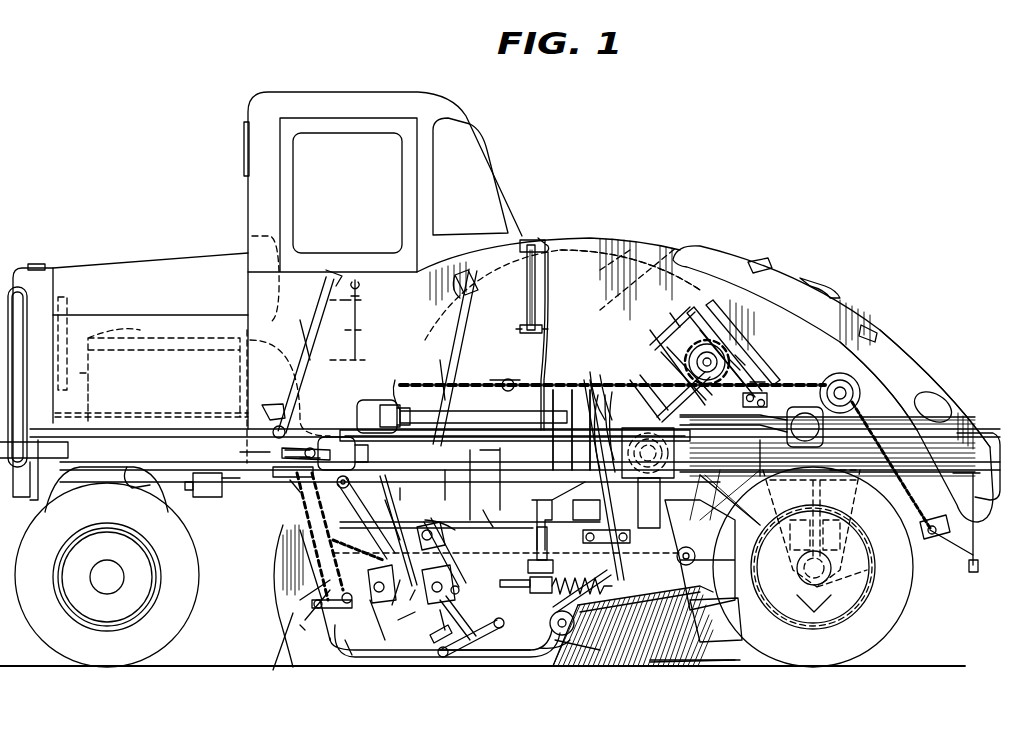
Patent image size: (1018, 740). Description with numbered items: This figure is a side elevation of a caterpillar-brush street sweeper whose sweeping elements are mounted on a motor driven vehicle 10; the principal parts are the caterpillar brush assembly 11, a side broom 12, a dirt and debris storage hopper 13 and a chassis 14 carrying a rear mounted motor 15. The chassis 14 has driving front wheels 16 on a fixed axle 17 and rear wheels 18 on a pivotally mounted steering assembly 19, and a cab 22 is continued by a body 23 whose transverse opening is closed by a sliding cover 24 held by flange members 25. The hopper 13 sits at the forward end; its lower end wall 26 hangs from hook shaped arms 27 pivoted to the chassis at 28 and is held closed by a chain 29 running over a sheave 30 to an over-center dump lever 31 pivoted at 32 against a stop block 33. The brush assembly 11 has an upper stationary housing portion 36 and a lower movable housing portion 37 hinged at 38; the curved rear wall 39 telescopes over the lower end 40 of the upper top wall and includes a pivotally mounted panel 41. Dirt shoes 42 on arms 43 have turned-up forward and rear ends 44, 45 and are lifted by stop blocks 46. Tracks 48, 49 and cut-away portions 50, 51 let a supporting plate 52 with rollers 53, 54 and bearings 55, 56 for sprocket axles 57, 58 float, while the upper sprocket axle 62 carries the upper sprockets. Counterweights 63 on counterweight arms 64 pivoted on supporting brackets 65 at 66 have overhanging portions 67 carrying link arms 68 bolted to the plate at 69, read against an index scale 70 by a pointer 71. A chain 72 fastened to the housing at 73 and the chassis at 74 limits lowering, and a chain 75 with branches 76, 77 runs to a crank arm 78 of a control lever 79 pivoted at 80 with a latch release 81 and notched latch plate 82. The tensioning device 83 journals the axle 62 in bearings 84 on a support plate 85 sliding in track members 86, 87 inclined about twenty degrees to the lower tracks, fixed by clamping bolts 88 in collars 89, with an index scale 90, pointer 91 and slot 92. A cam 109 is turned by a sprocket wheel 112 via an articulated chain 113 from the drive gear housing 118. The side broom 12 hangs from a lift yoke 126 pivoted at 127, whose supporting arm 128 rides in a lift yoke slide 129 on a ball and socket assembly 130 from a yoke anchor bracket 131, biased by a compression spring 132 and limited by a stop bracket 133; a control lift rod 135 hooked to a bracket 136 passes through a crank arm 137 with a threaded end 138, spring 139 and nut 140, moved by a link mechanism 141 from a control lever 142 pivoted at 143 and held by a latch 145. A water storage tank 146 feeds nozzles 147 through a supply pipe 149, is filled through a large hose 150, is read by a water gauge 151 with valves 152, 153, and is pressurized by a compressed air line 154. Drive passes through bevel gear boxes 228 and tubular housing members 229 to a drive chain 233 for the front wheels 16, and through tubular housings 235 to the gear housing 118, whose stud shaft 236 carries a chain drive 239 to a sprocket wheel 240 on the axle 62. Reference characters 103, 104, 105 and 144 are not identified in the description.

The motor driven vehicle 10 is at (245, 252).
The caterpillar brush assembly 11 is at (305, 622).
The side brooms 12 is at (652, 660).
The dirt and debris storage hopper 13 is at (907, 362).
The chassis 14 is at (150, 455).
The rear mounted motor 15 is at (143, 322).
The front wheels 16 is at (903, 620).
The fixed axle 17 is at (845, 575).
The rear wheels 18 is at (52, 636).
The steering assembly 19 is at (93, 477).
The cab 22 is at (259, 116).
The body 23 is at (740, 260).
The sliding cover 24 is at (842, 300).
The flange members 25 is at (770, 260).
The lower end wall 26 is at (965, 508).
The hook shaped arms 27 is at (997, 418).
The pivot of hook shaped arms 28 is at (952, 405).
The flexible cable or chain 29 is at (612, 392).
The sheave 30 is at (850, 382).
The dump lever 31 is at (365, 345).
The pivot of dump lever 32 is at (506, 380).
The stop block 33 is at (435, 370).
The upper stationary housing portion 36 is at (487, 526).
The lower movable housing portion 37 is at (300, 612).
The hinge 38 is at (628, 530).
The rear wall 39 is at (295, 540).
The lower end of top wall 40 is at (305, 503).
The pivotally mounted panel 41 is at (297, 600).
The dirt shoes 42 is at (440, 658).
The arms 43 is at (483, 632).
The forward end 44 is at (548, 655).
The rear end 45 is at (352, 658).
The stop block 46 is at (478, 660).
The track 48 is at (358, 604).
The track 49 is at (460, 592).
The cut-away portion 50 is at (392, 608).
The cut-away portion 51 is at (452, 615).
The caterpillar brush supporting plate 52 is at (412, 603).
The wheels or rollers 53 is at (352, 600).
The wheels or rollers 54 is at (428, 550).
The bearing 55 is at (388, 606).
The bearing 56 is at (442, 612).
The sprocket axle 57 is at (368, 612).
The sprocket axle 58 is at (428, 588).
The sprocket axle 62 is at (722, 345).
The counterweights 63 is at (203, 497).
The counterweight arms 64 is at (232, 490).
The supporting brackets 65 is at (345, 440).
The pivot of counterweight arms 66 is at (342, 490).
The overhanging portion 67 is at (370, 478).
The supporting link arm 68 is at (375, 493).
The link arm connection 69 is at (428, 498).
The index scale 70 is at (460, 530).
The pointer 71 is at (438, 530).
The flexible cable or chain 72 is at (316, 568).
The chain connection to housing 73 is at (325, 650).
The chain connection to chassis 74 is at (240, 452).
The flexible chain 75 is at (290, 480).
The lower chain portion 76 is at (282, 550).
The lower chain portion 77 is at (290, 565).
The crank arm 78 is at (305, 445).
The control lever 79 is at (302, 318).
The pivot of control lever 80 is at (287, 450).
The control lever latch release 81 is at (331, 272).
The notched latch plate 82 is at (264, 415).
The caterpillar brush tensioning device 83 is at (700, 318).
The bearings 84 is at (672, 322).
The support plate 85 is at (670, 325).
The track member 86 is at (662, 350).
The track member 87 is at (714, 335).
The clamping bolts 88 is at (766, 380).
The collars 89 is at (768, 402).
The index scale 90 is at (683, 397).
The pointer 91 is at (652, 345).
The longitudinal slot 92 is at (748, 364).
The plate 103 is at (552, 655).
The broom shaft 104 is at (556, 607).
The broom hub 105 is at (550, 622).
The cam 109 is at (700, 620).
The sprocket wheel 112 is at (700, 575).
The articulated chain 113 is at (695, 510).
The side broom drive gear housing 118 is at (827, 444).
The lift yoke 126 is at (612, 655).
The lift yoke pivot 127 is at (680, 665).
The lift yoke supporting arm 128 is at (512, 576).
The lift yoke slide 129 is at (528, 562).
The ball and socket assembly 130 is at (555, 545).
The yoke anchor bracket 131 is at (548, 505).
The helical compression spring 132 is at (577, 578).
The side broom stop bracket 133 is at (705, 490).
The control lift rod 135 is at (568, 492).
The bracket 136 is at (610, 560).
The crank arm 137 is at (540, 412).
The threaded upper end 138 is at (578, 440).
The spring 139 is at (598, 430).
The nut 140 is at (596, 375).
The link mechanism 141 is at (548, 385).
The control lever 142 is at (452, 380).
The pivot of control lever 143 is at (445, 470).
The rail 144 is at (470, 433).
The control lever latch 145 is at (455, 282).
The water storage tank 146 is at (590, 250).
The nozzles 147 is at (968, 566).
The supply pipe 149 is at (968, 545).
The large hose 150 is at (933, 380).
The water gauge 151 is at (527, 280).
The valve 152 is at (527, 242).
The valve 153 is at (520, 327).
The compressed air line 154 is at (550, 280).
The bevel gear boxes 228 is at (398, 378).
The tubular housing members 229 is at (762, 440).
The drive chain 233 is at (835, 465).
The tubular housings 235 is at (500, 470).
The stud shaft 236 is at (648, 478).
The chain drive 239 is at (655, 385).
The sprocket wheel 240 is at (728, 355).